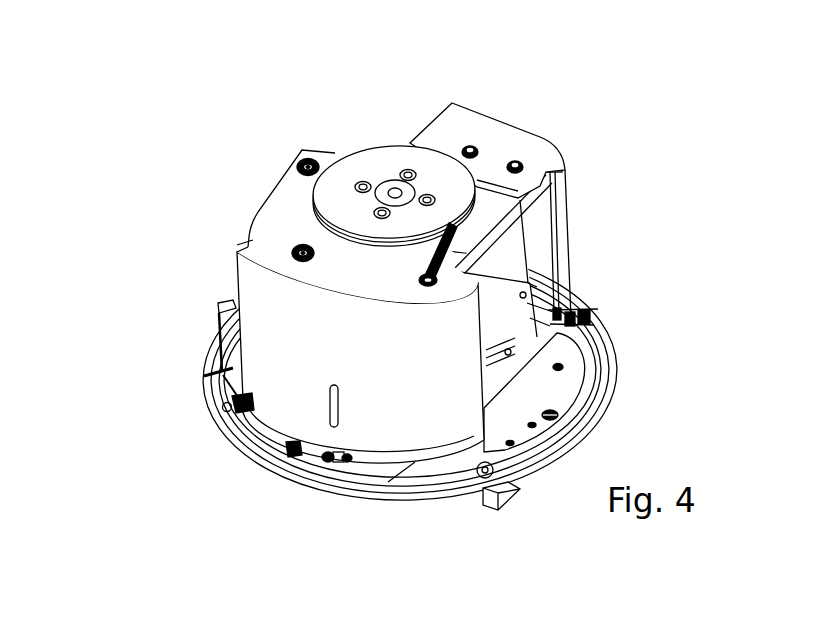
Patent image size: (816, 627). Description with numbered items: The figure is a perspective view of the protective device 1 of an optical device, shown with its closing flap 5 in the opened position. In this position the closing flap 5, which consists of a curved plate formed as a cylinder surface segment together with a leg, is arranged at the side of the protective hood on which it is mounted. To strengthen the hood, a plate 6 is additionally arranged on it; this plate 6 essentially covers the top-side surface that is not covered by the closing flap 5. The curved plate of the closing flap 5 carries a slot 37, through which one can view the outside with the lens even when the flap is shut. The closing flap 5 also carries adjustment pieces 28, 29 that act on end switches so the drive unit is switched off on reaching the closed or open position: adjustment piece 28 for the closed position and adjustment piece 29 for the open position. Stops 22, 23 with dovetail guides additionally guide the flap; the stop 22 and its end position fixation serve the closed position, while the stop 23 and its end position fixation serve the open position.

The protective device 1 is at (189, 122).
The closing flap 5 is at (268, 302).
The plate 6 is at (492, 130).
The stop 22 is at (594, 312).
The stop 23 is at (241, 403).
The adjustment piece 28 is at (332, 462).
The adjustment piece 29 is at (290, 455).
The slot 37 is at (328, 413).